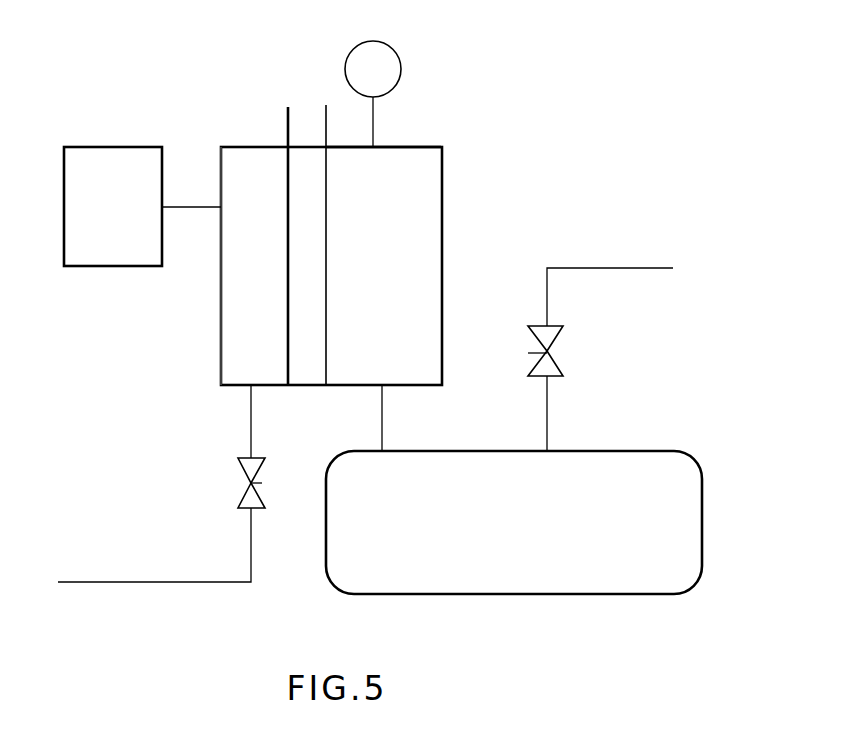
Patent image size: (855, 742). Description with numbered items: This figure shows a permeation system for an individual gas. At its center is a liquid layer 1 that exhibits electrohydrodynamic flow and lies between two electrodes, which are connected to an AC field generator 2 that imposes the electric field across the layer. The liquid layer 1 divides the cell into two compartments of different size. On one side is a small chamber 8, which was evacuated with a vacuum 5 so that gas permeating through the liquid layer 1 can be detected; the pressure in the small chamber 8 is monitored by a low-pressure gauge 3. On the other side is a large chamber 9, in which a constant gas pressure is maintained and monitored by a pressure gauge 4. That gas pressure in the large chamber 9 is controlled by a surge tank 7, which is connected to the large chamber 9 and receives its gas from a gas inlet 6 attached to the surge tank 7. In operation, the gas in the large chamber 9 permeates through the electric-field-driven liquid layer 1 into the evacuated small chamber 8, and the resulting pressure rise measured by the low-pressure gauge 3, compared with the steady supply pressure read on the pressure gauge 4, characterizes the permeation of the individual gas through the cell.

The liquid layer 1 is at (314, 271).
The AC field generator 2 is at (286, 107).
The low-pressure gauge 3 is at (122, 224).
The pressure gauge 4 is at (385, 85).
The vacuum 5 is at (131, 581).
The gas inlet 6 is at (614, 268).
The surge tank 7 is at (521, 534).
The small chamber 8 is at (261, 297).
The large chamber 9 is at (376, 297).